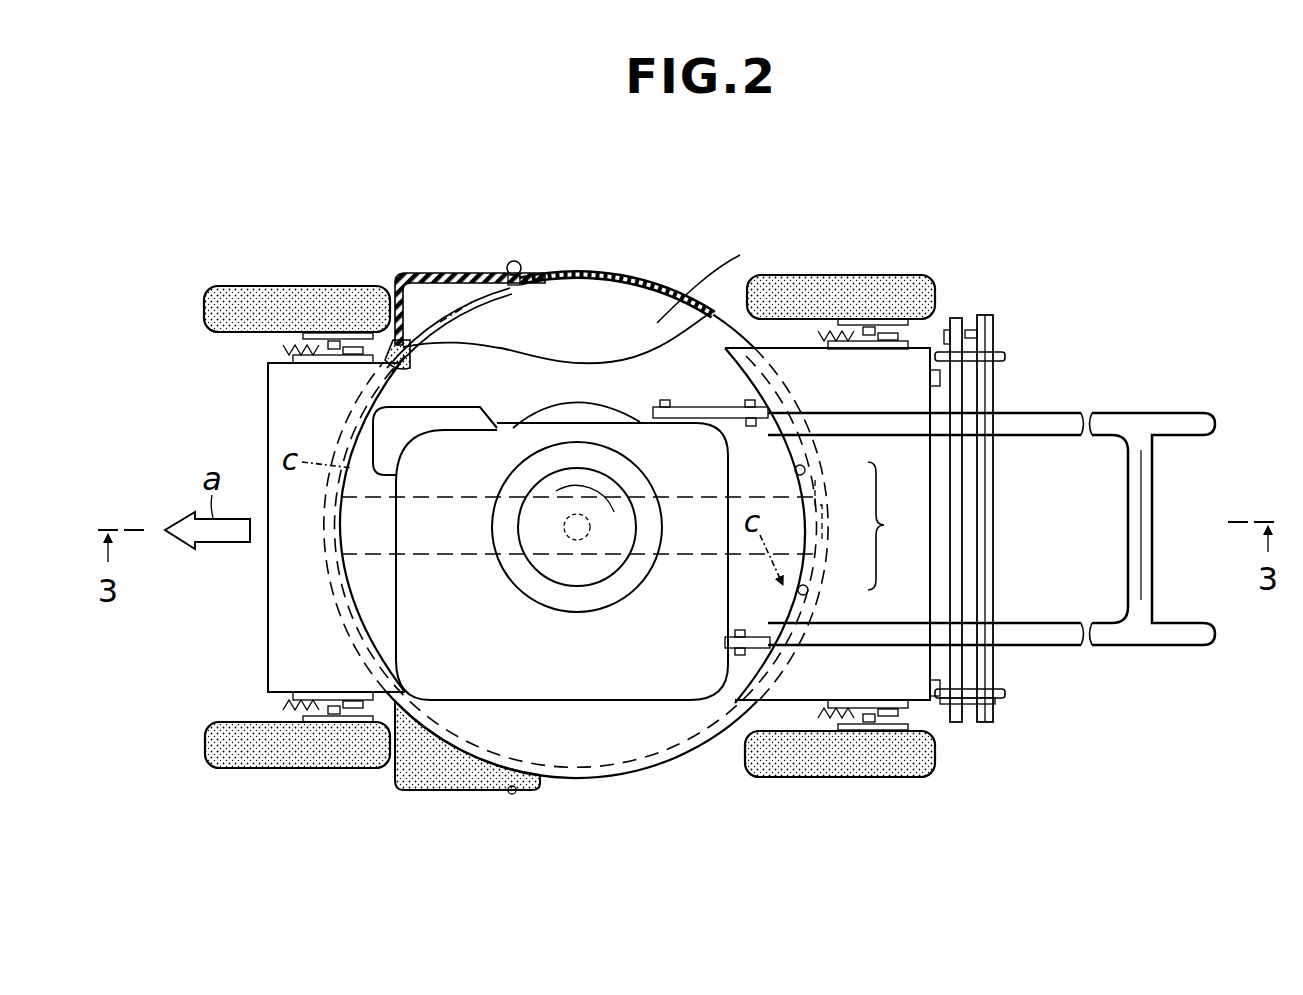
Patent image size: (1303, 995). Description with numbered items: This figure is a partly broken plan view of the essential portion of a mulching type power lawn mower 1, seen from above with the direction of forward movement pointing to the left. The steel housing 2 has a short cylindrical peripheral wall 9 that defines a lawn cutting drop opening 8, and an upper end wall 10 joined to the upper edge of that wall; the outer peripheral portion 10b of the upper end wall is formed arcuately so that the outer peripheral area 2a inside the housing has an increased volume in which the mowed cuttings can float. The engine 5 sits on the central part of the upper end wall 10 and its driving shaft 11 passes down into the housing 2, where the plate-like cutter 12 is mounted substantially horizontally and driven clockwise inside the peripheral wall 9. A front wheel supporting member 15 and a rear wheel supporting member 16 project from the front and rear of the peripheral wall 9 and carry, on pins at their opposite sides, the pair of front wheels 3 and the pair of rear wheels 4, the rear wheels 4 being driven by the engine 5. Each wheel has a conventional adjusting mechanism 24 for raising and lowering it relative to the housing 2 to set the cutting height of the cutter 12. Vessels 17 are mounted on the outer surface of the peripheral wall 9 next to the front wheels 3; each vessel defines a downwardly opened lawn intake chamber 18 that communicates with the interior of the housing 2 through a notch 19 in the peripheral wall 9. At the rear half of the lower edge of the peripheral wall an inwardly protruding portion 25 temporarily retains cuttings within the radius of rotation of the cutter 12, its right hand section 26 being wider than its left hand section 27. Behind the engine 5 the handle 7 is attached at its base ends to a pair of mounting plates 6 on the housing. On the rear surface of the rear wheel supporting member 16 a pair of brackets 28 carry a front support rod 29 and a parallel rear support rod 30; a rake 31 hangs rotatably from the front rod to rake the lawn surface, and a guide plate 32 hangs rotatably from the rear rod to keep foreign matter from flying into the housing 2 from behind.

The power lawn mower 1 is at (630, 258).
The housing 2 is at (680, 300).
The outer peripheral area 2a is at (719, 271).
The front wheels 3 is at (303, 305).
The rear wheels 4 is at (838, 282).
The engine 5 is at (706, 590).
The mounting plates 6 is at (703, 407).
The handle 7 is at (1098, 415).
The lawn cutting drop opening 8 is at (610, 338).
The peripheral wall 9 is at (598, 275).
The upper end wall 10 is at (572, 748).
The outer peripheral portion 10b is at (633, 742).
The driving shaft 11 is at (566, 538).
The cutter 12 is at (447, 560).
The front wheel supporting member 15 is at (285, 594).
The rear wheel supporting member 16 is at (920, 550).
The vessels 17 is at (462, 770).
The lawn intake chamber 18 is at (428, 270).
The notch 19 is at (472, 310).
The adjusting mechanism 24 is at (278, 348).
The inwardly protruding portion 25 is at (895, 526).
The right hand section 26 is at (805, 472).
The left hand section 27 is at (808, 590).
The brackets 28 is at (1003, 352).
The front support rod 29 is at (975, 498).
The rear support rod 30 is at (996, 703).
The rake 31 is at (963, 322).
The guide plate 32 is at (995, 326).